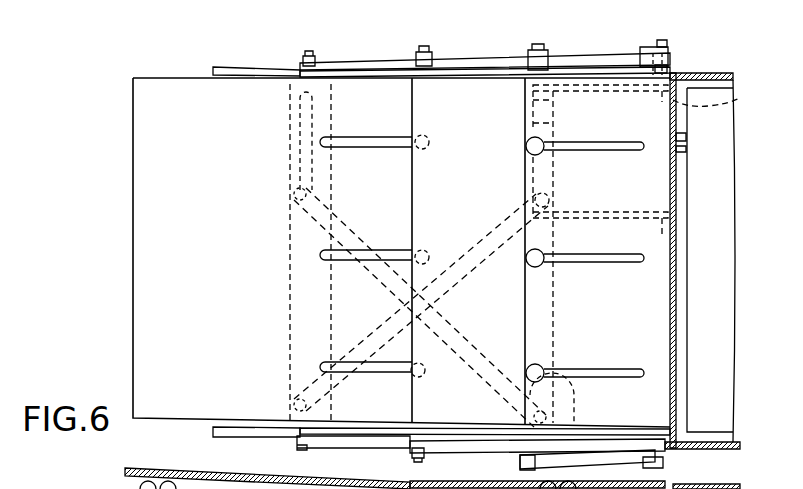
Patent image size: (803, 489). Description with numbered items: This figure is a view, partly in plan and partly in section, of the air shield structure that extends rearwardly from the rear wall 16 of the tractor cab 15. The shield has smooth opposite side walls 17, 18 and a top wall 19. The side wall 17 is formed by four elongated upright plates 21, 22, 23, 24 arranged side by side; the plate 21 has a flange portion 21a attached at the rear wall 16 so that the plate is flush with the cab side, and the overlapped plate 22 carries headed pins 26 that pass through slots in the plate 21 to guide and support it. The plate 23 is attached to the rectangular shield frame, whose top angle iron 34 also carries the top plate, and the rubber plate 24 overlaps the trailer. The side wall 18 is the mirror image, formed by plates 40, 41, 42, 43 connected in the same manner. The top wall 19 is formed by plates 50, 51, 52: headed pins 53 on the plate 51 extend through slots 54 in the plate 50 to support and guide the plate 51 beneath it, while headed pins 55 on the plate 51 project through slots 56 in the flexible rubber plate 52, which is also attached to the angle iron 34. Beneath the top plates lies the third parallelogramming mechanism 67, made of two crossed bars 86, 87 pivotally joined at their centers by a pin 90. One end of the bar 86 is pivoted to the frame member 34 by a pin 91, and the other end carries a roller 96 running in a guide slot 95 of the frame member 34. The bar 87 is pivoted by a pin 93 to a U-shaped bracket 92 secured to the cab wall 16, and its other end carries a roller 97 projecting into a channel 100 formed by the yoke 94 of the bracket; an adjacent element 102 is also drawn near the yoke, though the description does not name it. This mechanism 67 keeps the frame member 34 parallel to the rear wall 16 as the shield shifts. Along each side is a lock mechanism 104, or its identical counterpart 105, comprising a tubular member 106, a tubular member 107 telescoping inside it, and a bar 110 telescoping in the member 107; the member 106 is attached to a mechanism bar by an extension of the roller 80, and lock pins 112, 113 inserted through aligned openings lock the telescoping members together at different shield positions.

The cab 15 is at (735, 320).
The rear wall 16 is at (686, 322).
The side wall 17 is at (442, 68).
The side wall 18 is at (367, 421).
The top wall 19 is at (462, 181).
The plate 21 is at (625, 72).
The flange portion 21a is at (742, 99).
The plate 22 is at (496, 70).
The plate 23 is at (370, 71).
The plate 24 is at (262, 68).
The headed pins 26 is at (553, 72).
The angle iron 34 is at (290, 239).
The plate 40 is at (642, 422).
The plate 41 is at (498, 432).
The plate 42 is at (377, 426).
The plate 43 is at (234, 427).
The plate 50 is at (596, 309).
The plate 51 is at (482, 316).
The plate 52 is at (195, 299).
The headed pins 53 is at (544, 141).
The slots 54 is at (615, 142).
The headed pins 55 is at (423, 137).
The slots 56 is at (365, 137).
The parallelogramming mechanism 67 is at (401, 300).
The roller 80 is at (665, 47).
The bar 86 is at (469, 266).
The bar 87 is at (476, 362).
The pin 90 is at (420, 363).
The pin 91 is at (295, 403).
The bracket 92 is at (597, 419).
The pin 93 is at (548, 416).
The yoke 94 is at (558, 317).
The guide slot 95 is at (302, 148).
The roller 96 is at (295, 193).
The roller 97 is at (548, 197).
The channel 100 is at (544, 167).
The bracket 102 is at (618, 213).
The lock mechanism 104 is at (672, 75).
The locking device 105 is at (675, 447).
The tubular member 106 is at (598, 60).
The tubular member 107 is at (461, 63).
The bar 110 is at (320, 57).
The lock pin 112 is at (543, 47).
The lock pin 113 is at (422, 51).